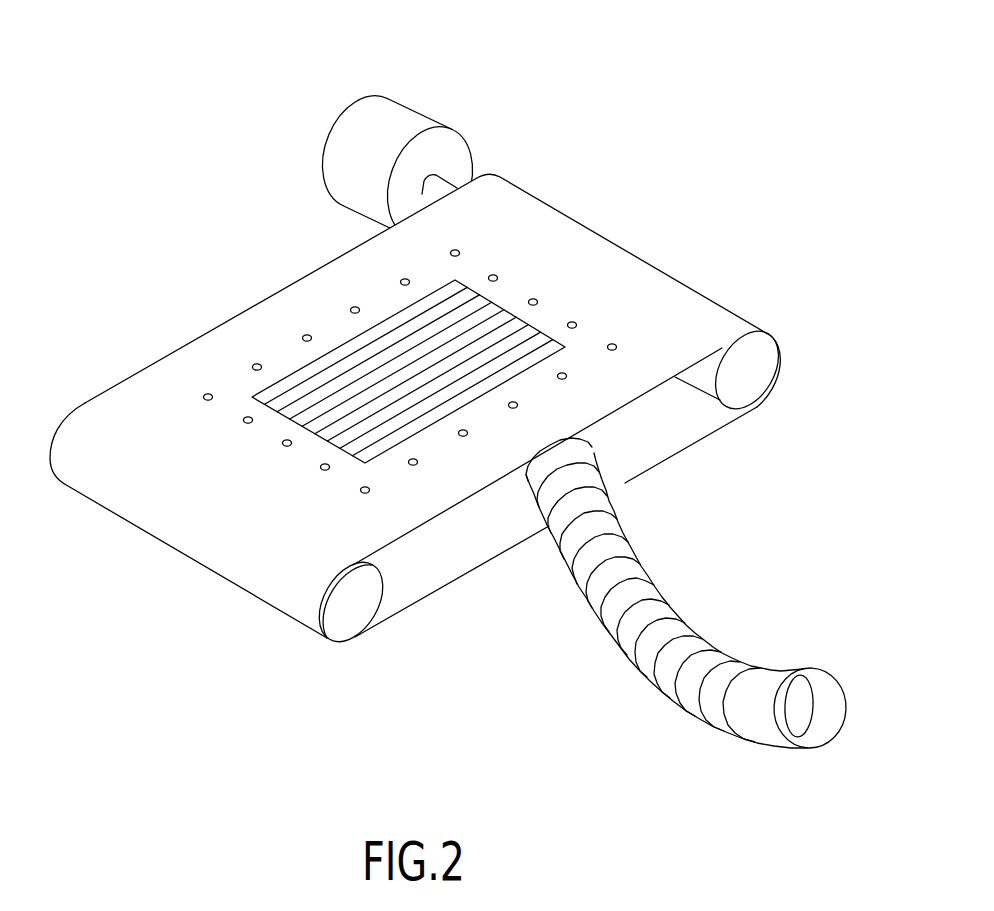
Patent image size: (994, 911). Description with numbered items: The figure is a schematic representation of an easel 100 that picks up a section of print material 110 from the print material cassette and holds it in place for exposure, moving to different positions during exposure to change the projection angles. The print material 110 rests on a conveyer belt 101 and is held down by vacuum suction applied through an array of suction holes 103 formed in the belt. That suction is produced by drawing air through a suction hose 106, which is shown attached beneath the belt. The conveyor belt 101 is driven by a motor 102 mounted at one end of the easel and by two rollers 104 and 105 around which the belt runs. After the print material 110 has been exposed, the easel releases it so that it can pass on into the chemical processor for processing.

The conveyor apparatus 100 is at (57, 407).
The conveyer belt 101 is at (658, 292).
The motor 102 is at (368, 113).
The suction holes 103 is at (354, 308).
The roller 104 is at (763, 357).
The roller 105 is at (352, 612).
The suction hose 106 is at (622, 618).
The print material 110 is at (485, 308).